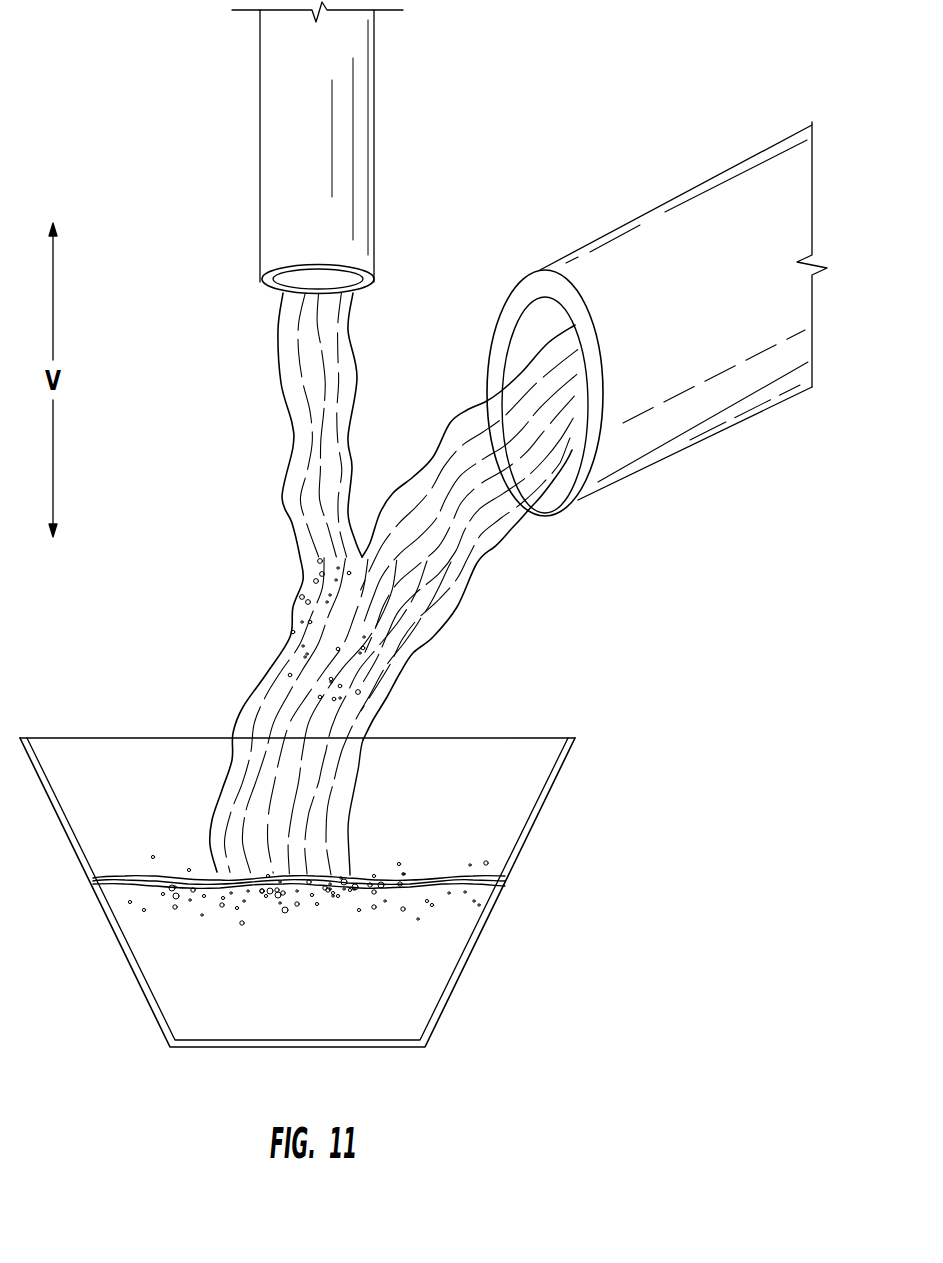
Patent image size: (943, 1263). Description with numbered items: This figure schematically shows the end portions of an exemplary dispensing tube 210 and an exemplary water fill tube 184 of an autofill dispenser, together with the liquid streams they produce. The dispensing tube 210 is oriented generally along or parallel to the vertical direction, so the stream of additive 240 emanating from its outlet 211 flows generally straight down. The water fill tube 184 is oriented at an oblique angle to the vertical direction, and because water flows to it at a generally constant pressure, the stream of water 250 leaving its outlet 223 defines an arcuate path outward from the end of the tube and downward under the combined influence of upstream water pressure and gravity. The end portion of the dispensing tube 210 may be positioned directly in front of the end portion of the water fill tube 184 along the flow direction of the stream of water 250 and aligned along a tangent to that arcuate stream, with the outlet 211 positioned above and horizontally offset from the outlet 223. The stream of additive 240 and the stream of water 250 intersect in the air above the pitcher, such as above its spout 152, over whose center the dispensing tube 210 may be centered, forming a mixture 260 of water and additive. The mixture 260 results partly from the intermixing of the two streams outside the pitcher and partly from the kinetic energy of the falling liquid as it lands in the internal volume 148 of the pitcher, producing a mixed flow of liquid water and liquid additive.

The dispensing tube 210 is at (273, 163).
The outlet of the dispensing tube 211 is at (250, 274).
The stream of additive 240 is at (280, 450).
The water fill tube 184 is at (661, 238).
The outlet of the water fill tube 223 is at (506, 309).
The stream of water 250 is at (493, 550).
The internal volume of the pitcher 148 is at (327, 857).
The spout 152 is at (548, 800).
The mixture of water and additive 260 is at (453, 937).